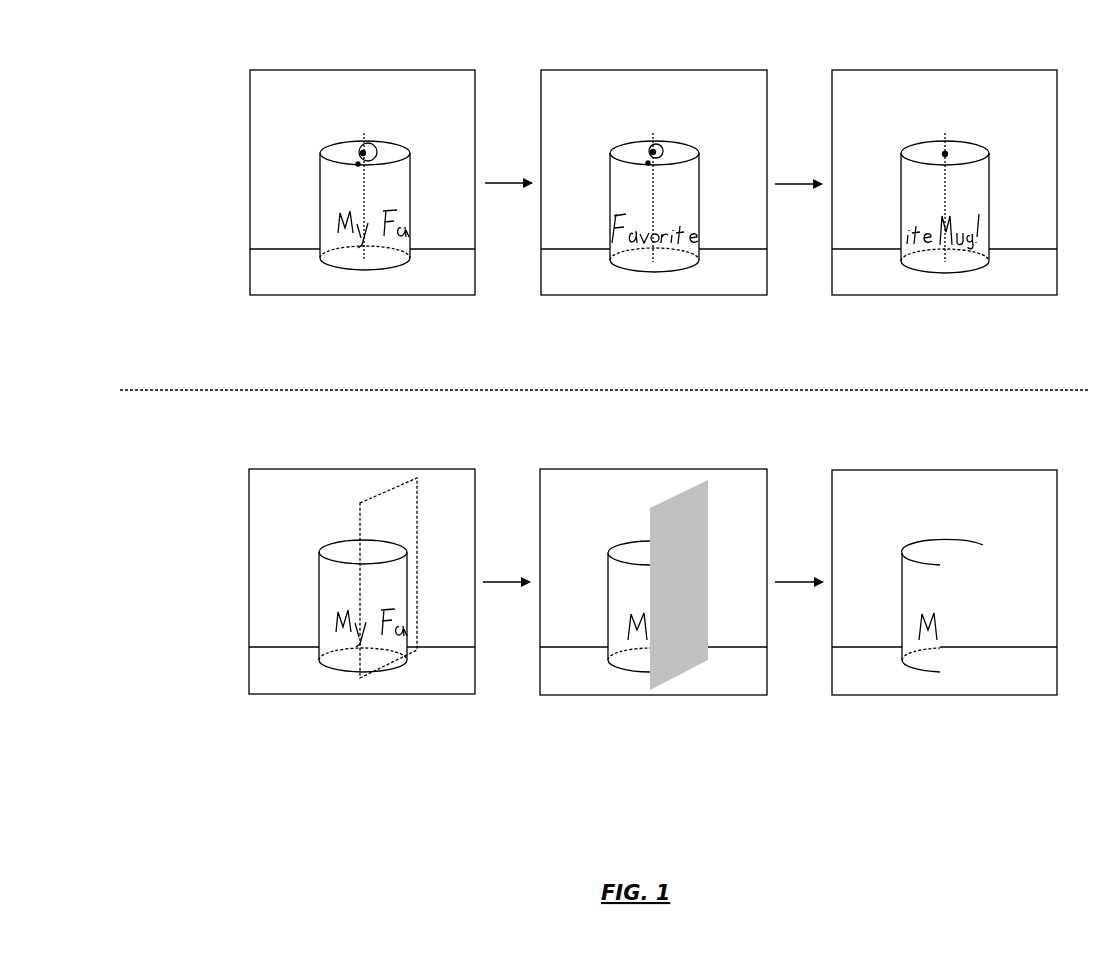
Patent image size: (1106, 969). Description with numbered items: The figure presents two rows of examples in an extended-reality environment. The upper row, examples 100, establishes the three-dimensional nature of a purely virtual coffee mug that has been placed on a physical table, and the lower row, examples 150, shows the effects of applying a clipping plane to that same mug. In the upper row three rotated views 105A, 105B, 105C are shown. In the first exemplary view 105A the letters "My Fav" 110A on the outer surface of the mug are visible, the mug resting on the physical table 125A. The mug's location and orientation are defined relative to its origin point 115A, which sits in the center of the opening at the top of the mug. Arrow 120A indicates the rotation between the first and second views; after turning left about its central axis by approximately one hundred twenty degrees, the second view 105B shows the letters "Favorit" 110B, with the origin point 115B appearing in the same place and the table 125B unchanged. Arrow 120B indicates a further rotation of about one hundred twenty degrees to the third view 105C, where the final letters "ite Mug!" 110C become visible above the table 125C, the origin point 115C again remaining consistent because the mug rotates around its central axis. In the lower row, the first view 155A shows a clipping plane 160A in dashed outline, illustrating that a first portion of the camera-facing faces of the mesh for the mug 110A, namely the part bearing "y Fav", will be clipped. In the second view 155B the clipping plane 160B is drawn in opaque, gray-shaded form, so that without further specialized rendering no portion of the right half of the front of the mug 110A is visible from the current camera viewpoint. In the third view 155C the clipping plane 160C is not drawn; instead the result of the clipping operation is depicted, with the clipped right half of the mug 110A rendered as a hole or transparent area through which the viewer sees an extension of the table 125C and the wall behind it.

The examples of a 3D object 100 is at (197, 56).
The first exemplary view of the virtual coffee mug 105A is at (362, 182).
The second exemplary view of the virtual coffee mug 105B is at (654, 182).
The third exemplary view of the virtual coffee mug 105C is at (944, 182).
The virtual coffee mug portion with letters "My Fav" 110A is at (366, 256).
The virtual coffee mug portion with letters "Favorit" 110B is at (660, 250).
The virtual coffee mug portion with letters "ite Mug!" 110C is at (960, 252).
The origin point 115A is at (362, 152).
The origin point 115B is at (655, 153).
The origin point 115C is at (946, 154).
The arrow 120A is at (357, 165).
The arrow 120B is at (649, 161).
The physical table 125A is at (325, 278).
The physical table 125B is at (617, 278).
The physical table 125C is at (917, 278).
The examples of the effects of applying a clipping plane 150 is at (197, 456).
The first view 155A is at (362, 581).
The second view 155B is at (653, 582).
The third view 155C is at (944, 582).
The clipping plane 160A is at (413, 507).
The clipping plane 160B is at (703, 505).
The clipping plane 160C is at (964, 597).